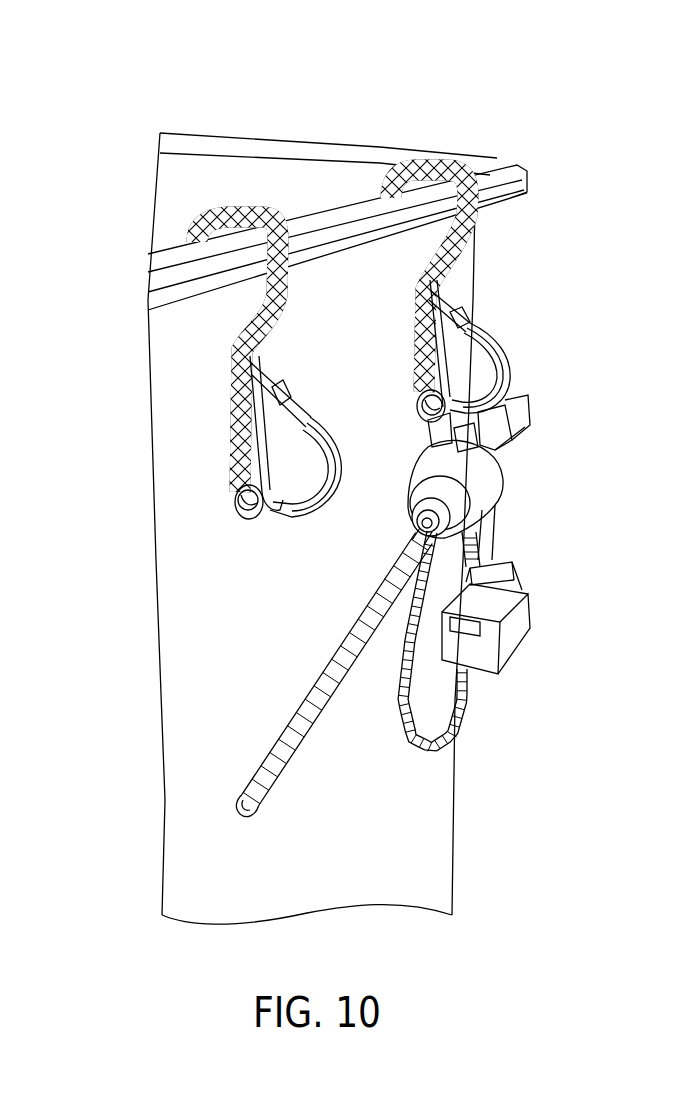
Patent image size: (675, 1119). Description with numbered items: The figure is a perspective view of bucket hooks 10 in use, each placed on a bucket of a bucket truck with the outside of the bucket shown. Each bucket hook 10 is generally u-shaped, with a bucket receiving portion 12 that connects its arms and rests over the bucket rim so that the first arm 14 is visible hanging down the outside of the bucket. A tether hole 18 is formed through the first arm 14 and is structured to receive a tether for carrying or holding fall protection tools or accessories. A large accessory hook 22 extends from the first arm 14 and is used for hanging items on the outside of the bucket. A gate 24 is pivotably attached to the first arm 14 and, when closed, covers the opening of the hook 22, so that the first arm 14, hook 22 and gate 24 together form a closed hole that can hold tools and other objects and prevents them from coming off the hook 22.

The bucket hook 10 is at (224, 163).
The bucket receiving portion 12 is at (203, 213).
The first arm 14 is at (230, 430).
The tether hole 18 is at (233, 503).
The accessory hook 22 is at (317, 507).
The gate 24 is at (283, 397).